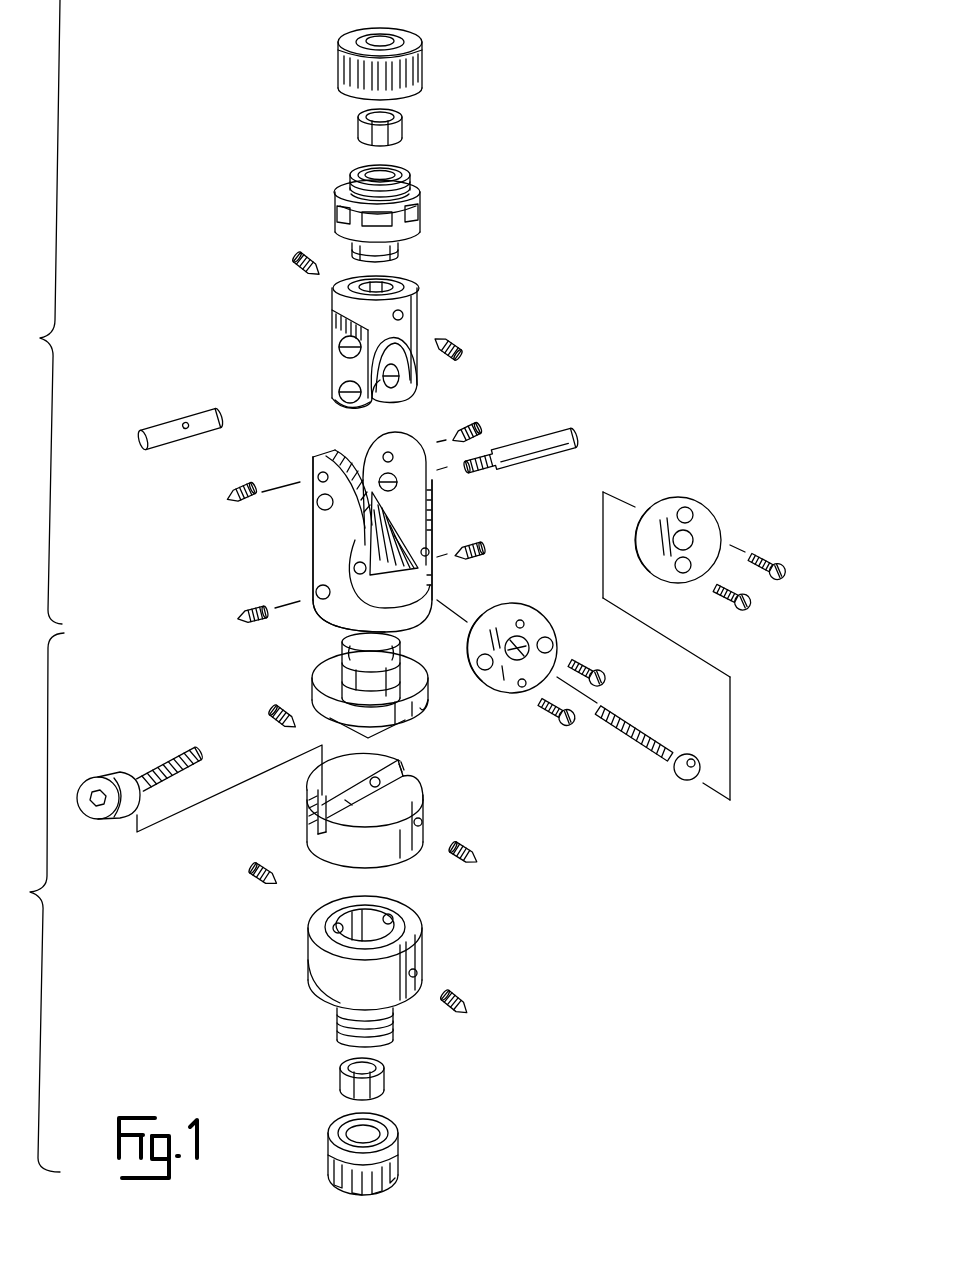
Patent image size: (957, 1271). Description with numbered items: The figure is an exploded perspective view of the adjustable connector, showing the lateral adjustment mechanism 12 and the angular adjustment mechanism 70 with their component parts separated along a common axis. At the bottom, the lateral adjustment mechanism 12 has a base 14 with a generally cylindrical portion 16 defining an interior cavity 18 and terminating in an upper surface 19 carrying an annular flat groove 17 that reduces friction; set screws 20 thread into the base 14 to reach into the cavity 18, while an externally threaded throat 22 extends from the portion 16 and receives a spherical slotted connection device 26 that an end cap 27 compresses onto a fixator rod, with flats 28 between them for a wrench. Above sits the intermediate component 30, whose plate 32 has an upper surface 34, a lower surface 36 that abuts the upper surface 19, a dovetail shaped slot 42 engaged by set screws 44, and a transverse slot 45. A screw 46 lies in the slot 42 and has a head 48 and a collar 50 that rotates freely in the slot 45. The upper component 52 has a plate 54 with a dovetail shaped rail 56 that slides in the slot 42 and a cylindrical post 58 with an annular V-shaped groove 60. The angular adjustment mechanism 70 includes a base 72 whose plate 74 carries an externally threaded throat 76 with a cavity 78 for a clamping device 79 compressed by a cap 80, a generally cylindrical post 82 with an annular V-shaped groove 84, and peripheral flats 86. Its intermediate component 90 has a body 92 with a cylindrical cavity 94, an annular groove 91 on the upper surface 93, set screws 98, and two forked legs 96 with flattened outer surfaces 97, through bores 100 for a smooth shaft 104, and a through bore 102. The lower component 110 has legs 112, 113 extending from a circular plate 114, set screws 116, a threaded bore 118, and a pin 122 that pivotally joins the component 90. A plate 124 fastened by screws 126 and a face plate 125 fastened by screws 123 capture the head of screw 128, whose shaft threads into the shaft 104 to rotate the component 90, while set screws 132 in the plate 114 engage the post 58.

The lateral adjustment mechanism 12 is at (33, 902).
The base 14 is at (296, 948).
The generally cylindrical portion 16 is at (308, 976).
The annular flat groove 17 is at (330, 928).
The interior cavity 18 is at (392, 912).
The upper surface 19 is at (415, 940).
The set screws 20 is at (250, 870).
The externally threaded throat 22 is at (338, 1030).
The spherical slotted connection device 26 is at (387, 1082).
The end cap 27 is at (400, 1152).
The flats 28 is at (395, 1012).
The intermediate component 30 is at (397, 802).
The plate 32 is at (385, 850).
The upper surface 34 is at (428, 822).
The lower surface 36 is at (335, 862).
The dovetail shaped slot 42 is at (405, 772).
The set screws 44 is at (272, 713).
The slot 45 is at (318, 790).
The screw 46 is at (123, 828).
The head 48 is at (92, 780).
The collar 50 is at (132, 768).
The upper component 52 is at (298, 679).
The plate 54 is at (405, 717).
The dovetail shaped rail 56 is at (432, 710).
The cylindrical post 58 is at (340, 651).
The annular V-shaped groove 60 is at (400, 648).
The angular adjustment mechanism 70 is at (32, 312).
The base 72 is at (440, 224).
The plate 74 is at (420, 208).
The externally threaded throat 76 is at (408, 188).
The cavity 78 is at (395, 168).
The clamping device 79 is at (404, 120).
The cap 80 is at (424, 60).
The generally cylindrical post 82 is at (400, 248).
The annular V-shaped groove 84 is at (355, 246).
The flats 86 is at (360, 225).
The intermediate component 90 is at (318, 324).
The annular groove 91 is at (332, 284).
The body 92 is at (332, 301).
The upper surface 93 is at (403, 293).
The cylindrical cavity 94 is at (400, 283).
The legs 96 is at (418, 378).
The flattened outer surface 97 is at (335, 366).
The set screws 98 is at (294, 258).
The through bore 100 is at (338, 394).
The through bore 102 is at (340, 347).
The shaft 104 is at (146, 442).
The lower component 110 is at (452, 518).
The leg 112 is at (436, 503).
The leg 113 is at (320, 537).
The circular plate 114 is at (325, 612).
The set screws 116 is at (481, 425).
The threaded bore 118 is at (318, 502).
The pin 122 is at (565, 437).
The screws 123 is at (778, 580).
The plate 124 is at (530, 610).
The face plate 125 is at (678, 497).
The screws 126 is at (598, 670).
The screw 128 is at (650, 757).
The set screws 132 is at (486, 547).